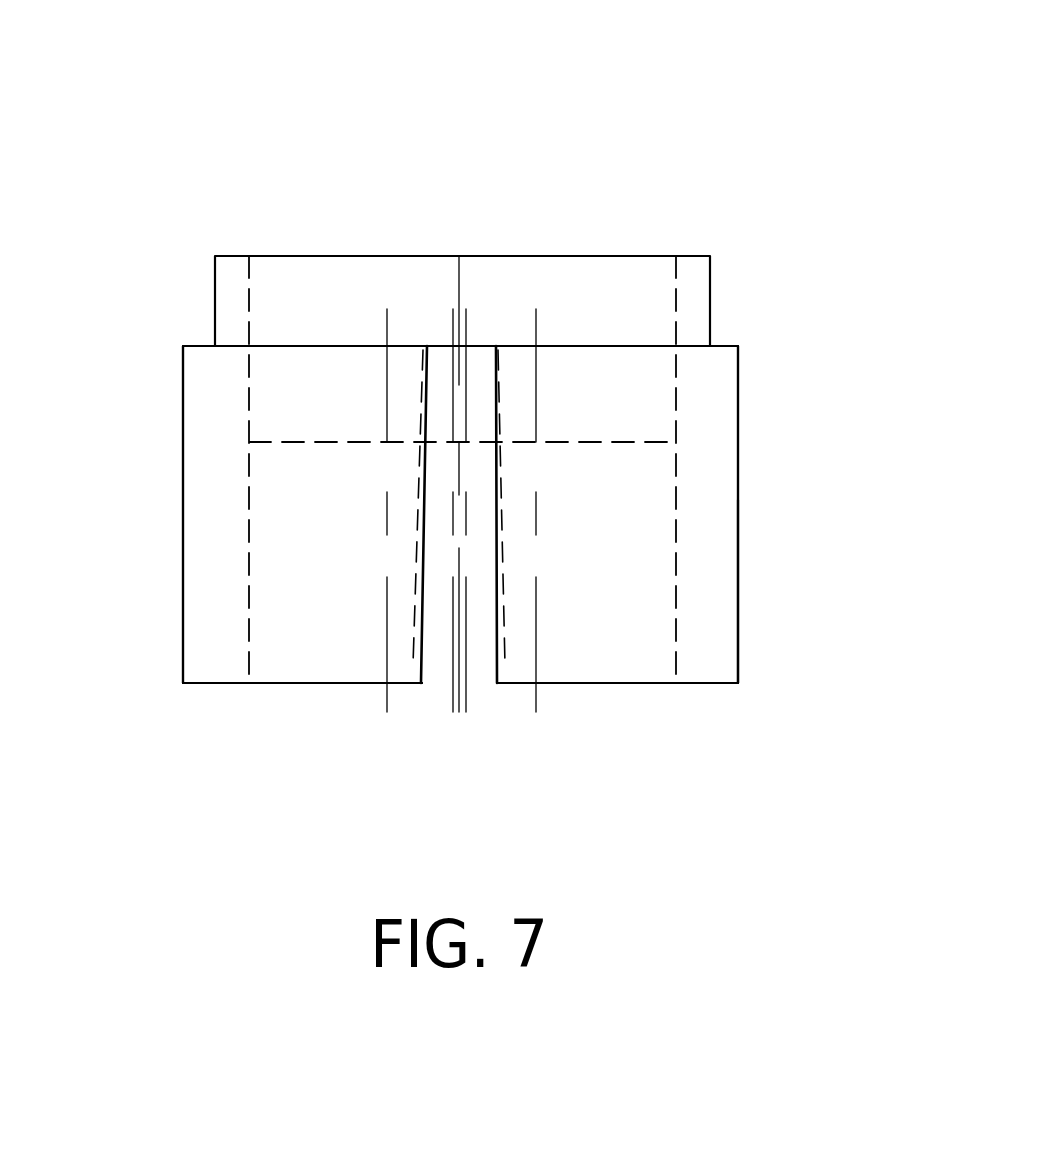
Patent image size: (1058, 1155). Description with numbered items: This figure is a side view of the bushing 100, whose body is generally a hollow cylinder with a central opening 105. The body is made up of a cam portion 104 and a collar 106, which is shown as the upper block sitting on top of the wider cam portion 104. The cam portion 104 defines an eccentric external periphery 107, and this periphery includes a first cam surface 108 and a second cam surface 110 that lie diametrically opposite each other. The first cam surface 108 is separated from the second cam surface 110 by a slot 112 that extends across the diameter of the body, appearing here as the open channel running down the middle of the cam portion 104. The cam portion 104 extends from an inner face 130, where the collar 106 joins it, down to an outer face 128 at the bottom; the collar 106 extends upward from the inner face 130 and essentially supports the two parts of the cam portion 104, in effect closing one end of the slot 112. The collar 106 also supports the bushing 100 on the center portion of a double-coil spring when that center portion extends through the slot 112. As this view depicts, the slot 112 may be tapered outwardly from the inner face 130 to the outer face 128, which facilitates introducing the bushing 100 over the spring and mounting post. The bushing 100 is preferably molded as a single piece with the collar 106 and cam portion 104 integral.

The bushing 100 is at (683, 107).
The collar 106 is at (710, 278).
The inner face 130 is at (723, 346).
The first cam surface 108 is at (168, 417).
The eccentric external periphery 107 is at (170, 508).
The second cam surface 110 is at (760, 423).
The cam portion 104 is at (755, 594).
The central opening 105 is at (660, 723).
The outer face 128 is at (280, 683).
The slot 112 is at (477, 705).